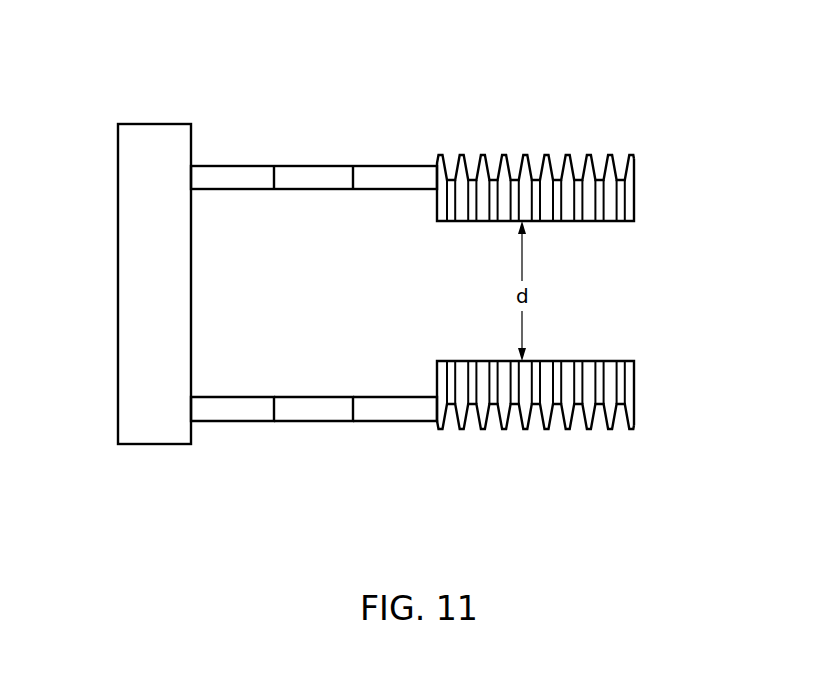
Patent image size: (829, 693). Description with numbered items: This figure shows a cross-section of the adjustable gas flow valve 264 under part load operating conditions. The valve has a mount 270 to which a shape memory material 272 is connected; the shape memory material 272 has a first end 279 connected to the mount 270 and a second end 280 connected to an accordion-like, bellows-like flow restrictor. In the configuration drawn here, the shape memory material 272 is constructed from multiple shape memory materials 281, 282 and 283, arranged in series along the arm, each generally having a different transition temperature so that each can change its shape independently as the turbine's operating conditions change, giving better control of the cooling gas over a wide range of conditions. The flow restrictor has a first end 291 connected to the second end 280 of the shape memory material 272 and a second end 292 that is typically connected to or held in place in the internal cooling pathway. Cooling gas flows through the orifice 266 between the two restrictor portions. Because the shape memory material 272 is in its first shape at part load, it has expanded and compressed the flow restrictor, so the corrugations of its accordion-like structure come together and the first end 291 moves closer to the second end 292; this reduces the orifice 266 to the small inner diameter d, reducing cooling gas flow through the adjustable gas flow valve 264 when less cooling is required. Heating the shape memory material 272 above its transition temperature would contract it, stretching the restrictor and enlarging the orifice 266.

The adjustable gas flow valve 264 is at (468, 138).
The orifice 266 is at (455, 385).
The mount 270 is at (141, 312).
The shape memory material 272 is at (314, 127).
The first end 279 is at (192, 163).
The second end 280 is at (541, 171).
The shape memory material 281 is at (243, 413).
The shape memory material 282 is at (328, 413).
The shape memory material 283 is at (397, 413).
The first end 291 is at (436, 203).
The second end 292 is at (634, 195).